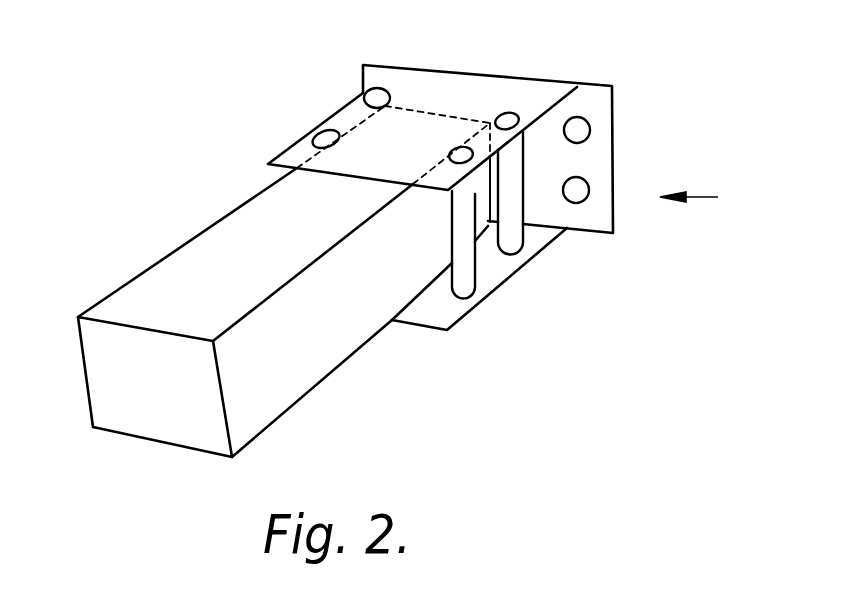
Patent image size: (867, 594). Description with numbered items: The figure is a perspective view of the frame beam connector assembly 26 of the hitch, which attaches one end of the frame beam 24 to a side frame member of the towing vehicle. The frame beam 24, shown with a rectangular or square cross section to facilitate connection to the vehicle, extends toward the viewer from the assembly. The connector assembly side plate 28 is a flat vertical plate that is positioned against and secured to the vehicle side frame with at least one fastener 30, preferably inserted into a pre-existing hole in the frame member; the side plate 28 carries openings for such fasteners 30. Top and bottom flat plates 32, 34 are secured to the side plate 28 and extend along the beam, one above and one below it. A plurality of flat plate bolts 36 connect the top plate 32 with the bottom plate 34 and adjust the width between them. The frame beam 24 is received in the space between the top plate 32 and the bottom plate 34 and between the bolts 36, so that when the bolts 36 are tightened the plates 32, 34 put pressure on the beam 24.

The frame beam 24 is at (312, 378).
The frame beam connector assembly 26 is at (704, 198).
The connector assembly side plate 28 is at (593, 93).
The fastener 30 is at (578, 191).
The top flat plate 32 is at (272, 163).
The bottom flat plate 34 is at (432, 318).
The flat plate bolts 36 is at (320, 136).